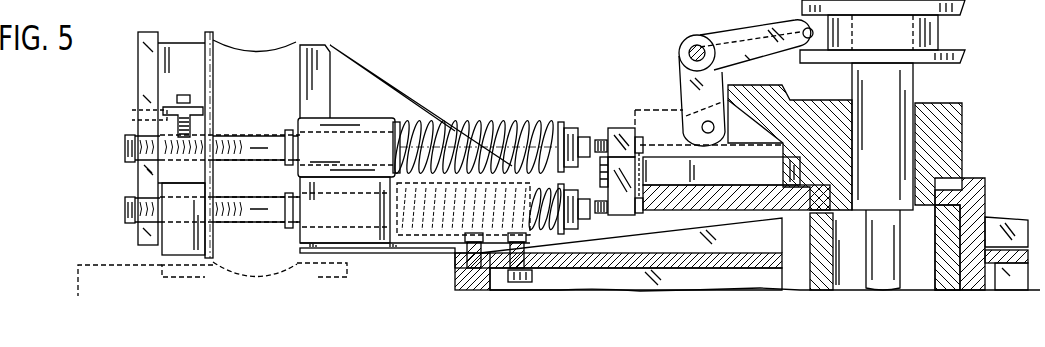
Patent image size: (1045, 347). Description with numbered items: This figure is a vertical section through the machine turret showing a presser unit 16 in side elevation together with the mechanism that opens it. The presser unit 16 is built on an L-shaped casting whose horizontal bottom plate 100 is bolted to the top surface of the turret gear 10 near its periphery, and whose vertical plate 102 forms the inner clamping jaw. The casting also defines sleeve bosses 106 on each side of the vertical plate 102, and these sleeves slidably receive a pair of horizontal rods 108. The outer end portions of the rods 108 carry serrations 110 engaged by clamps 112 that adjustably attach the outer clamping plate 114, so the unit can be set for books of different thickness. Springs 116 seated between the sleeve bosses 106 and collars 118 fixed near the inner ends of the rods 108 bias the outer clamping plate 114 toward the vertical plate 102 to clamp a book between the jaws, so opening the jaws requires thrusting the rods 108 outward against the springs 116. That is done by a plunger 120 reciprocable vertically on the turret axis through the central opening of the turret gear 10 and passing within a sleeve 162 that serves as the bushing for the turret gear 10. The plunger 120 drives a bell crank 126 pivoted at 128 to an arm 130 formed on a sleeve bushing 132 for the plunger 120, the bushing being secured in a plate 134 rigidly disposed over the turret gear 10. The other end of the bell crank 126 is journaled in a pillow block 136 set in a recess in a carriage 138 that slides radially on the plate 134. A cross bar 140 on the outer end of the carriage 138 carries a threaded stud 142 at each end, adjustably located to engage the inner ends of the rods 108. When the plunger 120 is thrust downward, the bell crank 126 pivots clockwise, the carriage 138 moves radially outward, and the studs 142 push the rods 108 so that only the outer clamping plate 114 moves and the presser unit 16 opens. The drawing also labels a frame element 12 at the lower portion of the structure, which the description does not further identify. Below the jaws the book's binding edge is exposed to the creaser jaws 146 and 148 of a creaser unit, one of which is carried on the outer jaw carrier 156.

The turret gear 10 is at (601, 262).
The frame 12 is at (455, 280).
The presser unit 16 is at (112, 116).
The bottom plate 100 is at (371, 253).
The vertical plate 102 is at (300, 26).
The sleeve bosses 106 is at (366, 118).
The rods 108 is at (127, 203).
The serrations 110 is at (229, 204).
The clamps 112 is at (146, 32).
The outer clamping plate 114 is at (209, 30).
The springs 116 is at (456, 124).
The collars 118 is at (559, 124).
The plunger 120 is at (910, 93).
The bell crank 126 is at (728, 32).
The pivot 128 is at (694, 44).
The arm 130 is at (790, 100).
The sleeve bushing 132 is at (965, 127).
The plate 134 is at (705, 188).
The pillow block 136 is at (690, 110).
The carriage 138 is at (633, 110).
The cross bar 140 is at (618, 127).
The threaded stud 142 is at (650, 200).
The creaser jaw 146 is at (318, 278).
The creaser jaw 148 is at (162, 278).
The outer jaw carrier 156 is at (78, 276).
The sleeve 162 is at (822, 222).